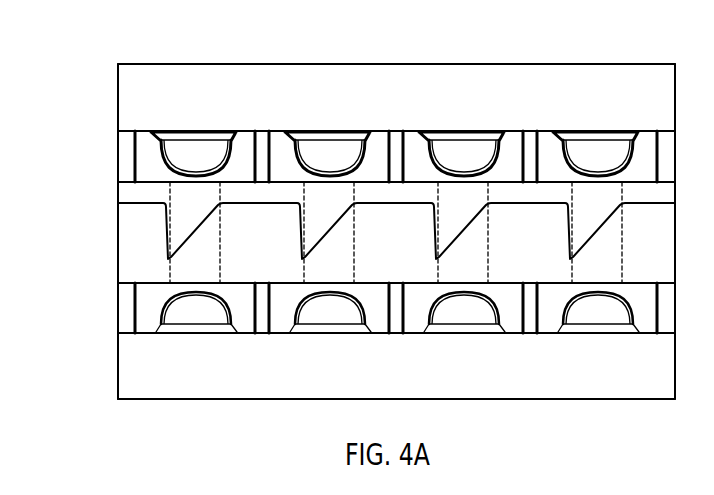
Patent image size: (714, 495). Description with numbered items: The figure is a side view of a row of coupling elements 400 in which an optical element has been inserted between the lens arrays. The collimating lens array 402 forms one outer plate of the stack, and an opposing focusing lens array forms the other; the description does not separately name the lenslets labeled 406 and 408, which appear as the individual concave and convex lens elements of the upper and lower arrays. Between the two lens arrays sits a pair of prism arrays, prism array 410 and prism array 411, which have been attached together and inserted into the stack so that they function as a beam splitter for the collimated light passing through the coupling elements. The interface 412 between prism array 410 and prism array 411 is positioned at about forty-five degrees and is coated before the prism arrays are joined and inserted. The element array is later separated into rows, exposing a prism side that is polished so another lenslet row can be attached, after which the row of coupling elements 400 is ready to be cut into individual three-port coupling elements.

The row of coupling elements 400 is at (78, 337).
The collimating lens array 402 is at (118, 98).
The upper concave pixel cell (lens cavity) 406 is at (199, 150).
The lower convex pixel cell (dome) 408 is at (198, 310).
The prism array 410 is at (188, 188).
The prism array 411 is at (133, 255).
The interface 412 is at (188, 253).